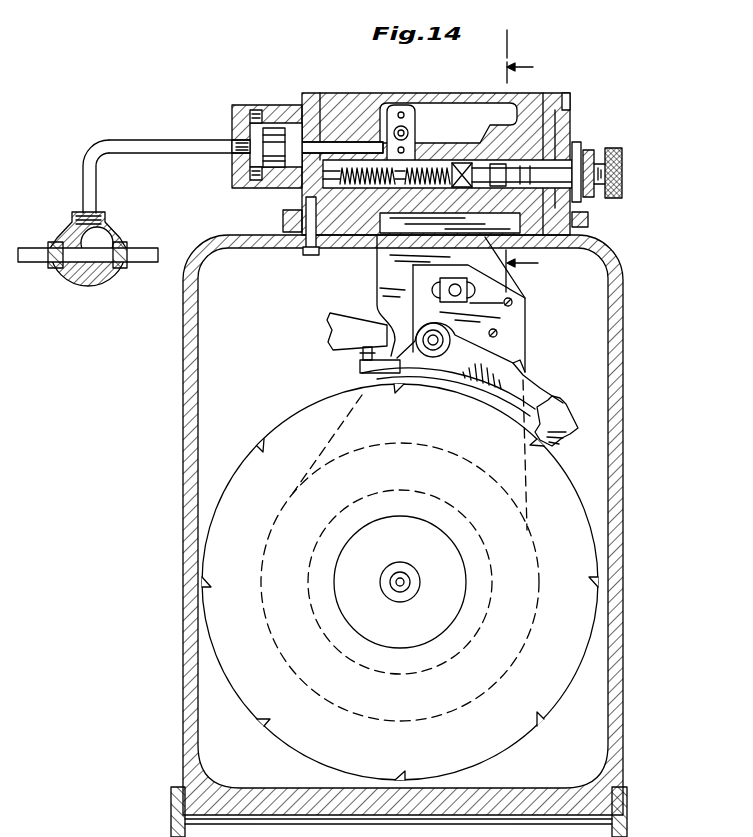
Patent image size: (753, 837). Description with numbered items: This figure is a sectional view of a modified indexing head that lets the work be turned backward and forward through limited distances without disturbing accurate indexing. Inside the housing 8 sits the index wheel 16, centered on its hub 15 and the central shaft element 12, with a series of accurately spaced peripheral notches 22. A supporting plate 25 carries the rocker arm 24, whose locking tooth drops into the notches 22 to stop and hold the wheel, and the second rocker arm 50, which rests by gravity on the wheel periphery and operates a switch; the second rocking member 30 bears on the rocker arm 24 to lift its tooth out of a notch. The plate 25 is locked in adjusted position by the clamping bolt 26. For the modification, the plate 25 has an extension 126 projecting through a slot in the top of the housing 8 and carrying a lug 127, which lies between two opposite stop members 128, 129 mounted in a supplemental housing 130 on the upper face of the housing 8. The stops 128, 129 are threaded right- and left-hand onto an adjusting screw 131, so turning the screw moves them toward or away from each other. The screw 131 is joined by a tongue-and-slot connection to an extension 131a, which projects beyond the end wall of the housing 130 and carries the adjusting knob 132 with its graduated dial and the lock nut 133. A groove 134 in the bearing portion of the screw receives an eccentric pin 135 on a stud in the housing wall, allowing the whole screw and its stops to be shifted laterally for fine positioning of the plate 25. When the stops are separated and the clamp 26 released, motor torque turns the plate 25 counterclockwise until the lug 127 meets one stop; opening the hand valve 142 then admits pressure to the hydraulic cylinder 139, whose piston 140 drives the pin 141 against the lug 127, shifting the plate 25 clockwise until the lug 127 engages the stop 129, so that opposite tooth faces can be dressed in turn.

The housing 8 is at (623, 277).
The hub shaft 12 is at (407, 583).
The hub 15 is at (537, 161).
The index wheel 16 is at (400, 579).
The peripheral notches 22 is at (262, 445).
The rocker arm 24 is at (475, 384).
The supporting plate 25 is at (476, 304).
The clamping bolt 26 is at (512, 308).
The second rocking member 30 is at (353, 312).
The second rocker arm 50 is at (582, 400).
The extension 126 is at (380, 136).
The lug 127 is at (418, 108).
The stop member 128 is at (330, 190).
The stop member 129 is at (377, 250).
The supplemental housing 130 is at (445, 142).
The adjusting screw 131 is at (468, 170).
The extension 131a is at (578, 142).
The adjusting knob 132 is at (590, 150).
The lock nut 133 is at (622, 173).
The groove 134 is at (562, 128).
The pin 135 is at (575, 212).
The hydraulic cylinder 139 is at (232, 130).
The piston 140 is at (263, 157).
The pin 141 is at (347, 100).
The hand valve 142 is at (68, 232).